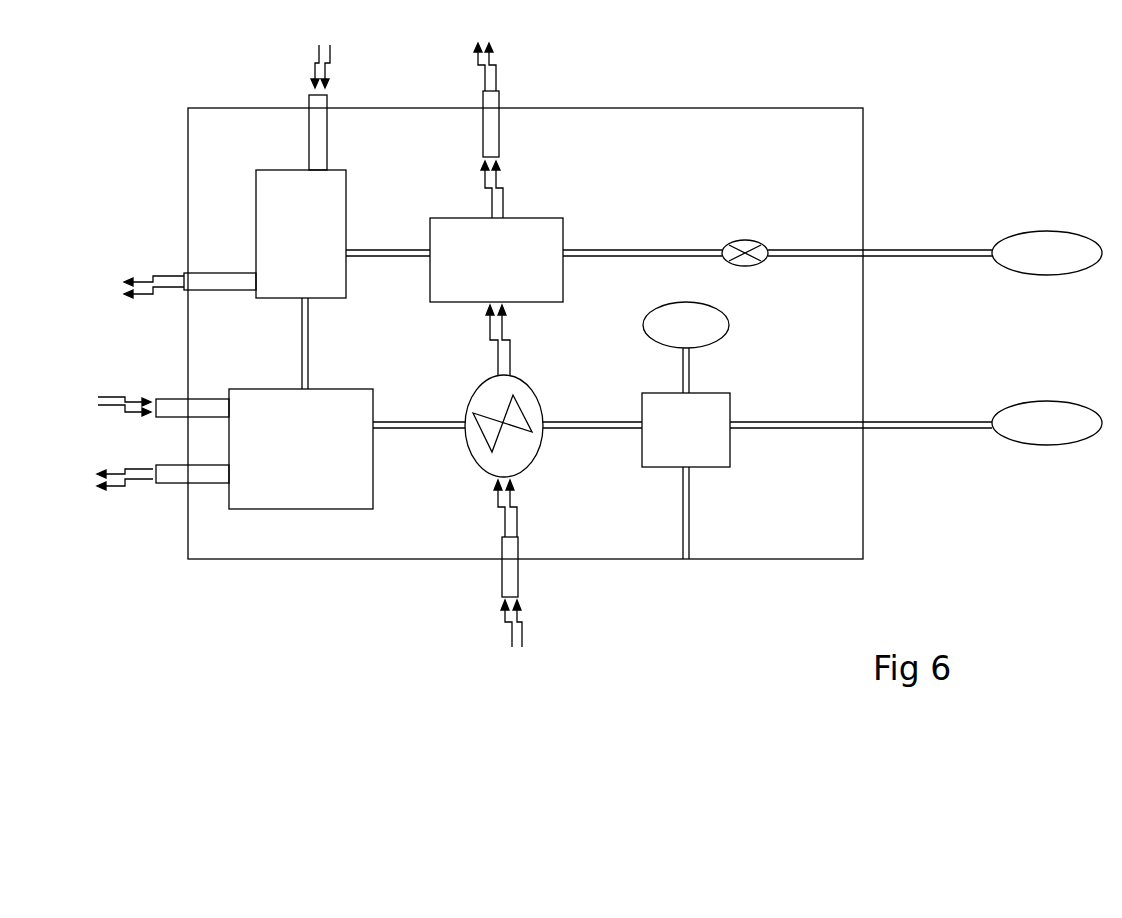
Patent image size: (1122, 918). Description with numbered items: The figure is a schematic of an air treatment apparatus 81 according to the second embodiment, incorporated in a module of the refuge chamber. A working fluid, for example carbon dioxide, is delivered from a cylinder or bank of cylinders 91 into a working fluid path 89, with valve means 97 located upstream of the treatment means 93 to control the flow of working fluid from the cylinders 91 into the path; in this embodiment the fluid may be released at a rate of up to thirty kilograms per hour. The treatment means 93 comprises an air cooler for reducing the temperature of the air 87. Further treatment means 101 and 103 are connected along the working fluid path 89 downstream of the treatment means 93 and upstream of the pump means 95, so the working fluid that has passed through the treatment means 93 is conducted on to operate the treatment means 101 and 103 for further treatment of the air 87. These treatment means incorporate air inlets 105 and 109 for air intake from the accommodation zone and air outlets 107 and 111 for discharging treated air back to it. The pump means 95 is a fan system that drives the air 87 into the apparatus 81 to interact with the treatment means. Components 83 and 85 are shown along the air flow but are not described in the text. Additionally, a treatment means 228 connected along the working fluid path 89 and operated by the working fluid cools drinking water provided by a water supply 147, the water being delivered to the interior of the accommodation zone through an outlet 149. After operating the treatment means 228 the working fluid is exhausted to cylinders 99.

The apparatus 81 is at (730, 92).
The inlet filter 83 is at (520, 545).
The outlet filter 85 is at (500, 118).
The air 87 is at (470, 65).
The working fluid path 89 is at (673, 253).
The cylinders 91 is at (1045, 230).
The treatment means 93 is at (532, 230).
The pump means 95 is at (470, 448).
The valve means 97 is at (742, 240).
The cylinders 99 is at (1042, 403).
The treatment means 101 is at (283, 225).
The treatment means 103 is at (275, 483).
The air inlet 105 is at (320, 135).
The air outlet 107 is at (218, 278).
The air inlet 109 is at (173, 407).
The air outlet 111 is at (172, 483).
The water supply 147 is at (652, 312).
The outlet 149 is at (678, 527).
The treatment means 228 is at (733, 447).